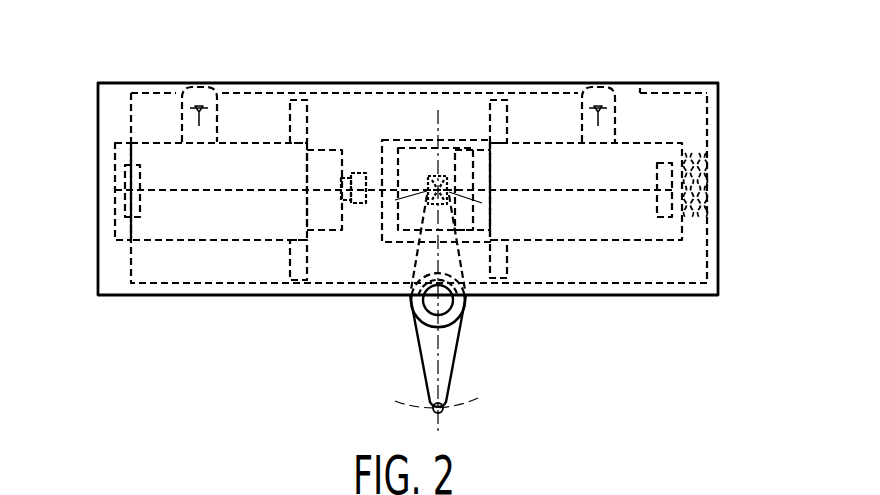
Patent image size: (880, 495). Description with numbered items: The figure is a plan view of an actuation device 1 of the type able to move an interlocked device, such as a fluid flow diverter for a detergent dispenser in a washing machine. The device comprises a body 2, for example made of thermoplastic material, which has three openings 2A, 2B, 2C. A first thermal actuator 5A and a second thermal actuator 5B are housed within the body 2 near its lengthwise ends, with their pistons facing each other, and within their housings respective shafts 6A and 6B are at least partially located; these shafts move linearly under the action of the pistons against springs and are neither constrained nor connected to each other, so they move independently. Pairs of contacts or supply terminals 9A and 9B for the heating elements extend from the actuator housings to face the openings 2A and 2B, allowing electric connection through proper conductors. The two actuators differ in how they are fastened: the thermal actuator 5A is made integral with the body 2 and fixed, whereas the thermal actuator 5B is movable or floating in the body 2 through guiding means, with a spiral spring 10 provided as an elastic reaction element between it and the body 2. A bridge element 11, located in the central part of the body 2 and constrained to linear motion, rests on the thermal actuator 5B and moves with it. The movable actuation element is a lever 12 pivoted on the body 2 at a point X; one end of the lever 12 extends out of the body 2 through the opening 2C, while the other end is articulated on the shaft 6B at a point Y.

The actuation device 1 is at (411, 222).
The body 2 is at (107, 278).
The opening 2A is at (233, 78).
The opening 2B is at (635, 77).
The opening 2C is at (402, 300).
The first thermal actuator 5A is at (155, 137).
The second thermal actuator 5B is at (655, 133).
The shaft 6A is at (353, 177).
The shaft 6B is at (436, 185).
The contacts 9A is at (222, 82).
The contacts 9B is at (610, 85).
The spiral spring 10 is at (690, 160).
The bridge element 11 is at (388, 138).
The lever 12 is at (430, 362).
The pivot point X is at (440, 302).
The articulation point Y is at (450, 182).